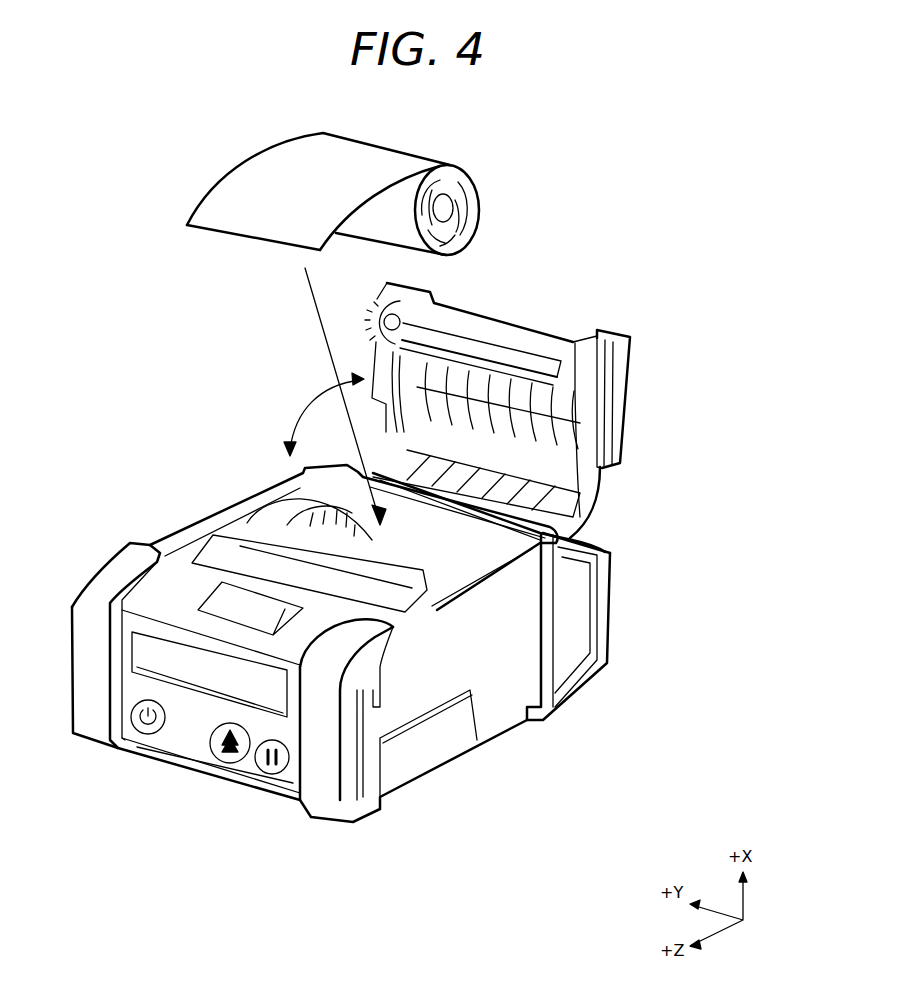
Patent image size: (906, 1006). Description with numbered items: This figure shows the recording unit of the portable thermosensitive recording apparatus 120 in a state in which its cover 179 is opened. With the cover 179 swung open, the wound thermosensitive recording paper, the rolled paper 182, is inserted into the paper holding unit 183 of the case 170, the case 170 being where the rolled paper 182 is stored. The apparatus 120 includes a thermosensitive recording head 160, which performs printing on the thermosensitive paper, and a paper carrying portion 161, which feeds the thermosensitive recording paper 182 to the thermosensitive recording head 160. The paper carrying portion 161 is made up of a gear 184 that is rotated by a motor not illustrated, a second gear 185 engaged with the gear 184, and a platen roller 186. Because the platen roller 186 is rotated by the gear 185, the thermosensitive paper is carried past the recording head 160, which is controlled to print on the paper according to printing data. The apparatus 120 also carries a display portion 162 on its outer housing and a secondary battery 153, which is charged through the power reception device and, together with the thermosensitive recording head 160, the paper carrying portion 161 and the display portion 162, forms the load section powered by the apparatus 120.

The portable thermosensitive recording apparatus 120 is at (140, 362).
The secondary battery 153 is at (440, 750).
The thermosensitive recording head 160 is at (233, 502).
The paper carrying portion 161 is at (287, 470).
The display portion 162 is at (197, 678).
The case 170 is at (613, 547).
The cover 179 is at (627, 335).
The rolled paper 182 is at (262, 188).
The paper holding unit 183 is at (503, 570).
The gear 184 is at (280, 477).
The gear 185 is at (360, 306).
The platen roller 186 is at (506, 333).